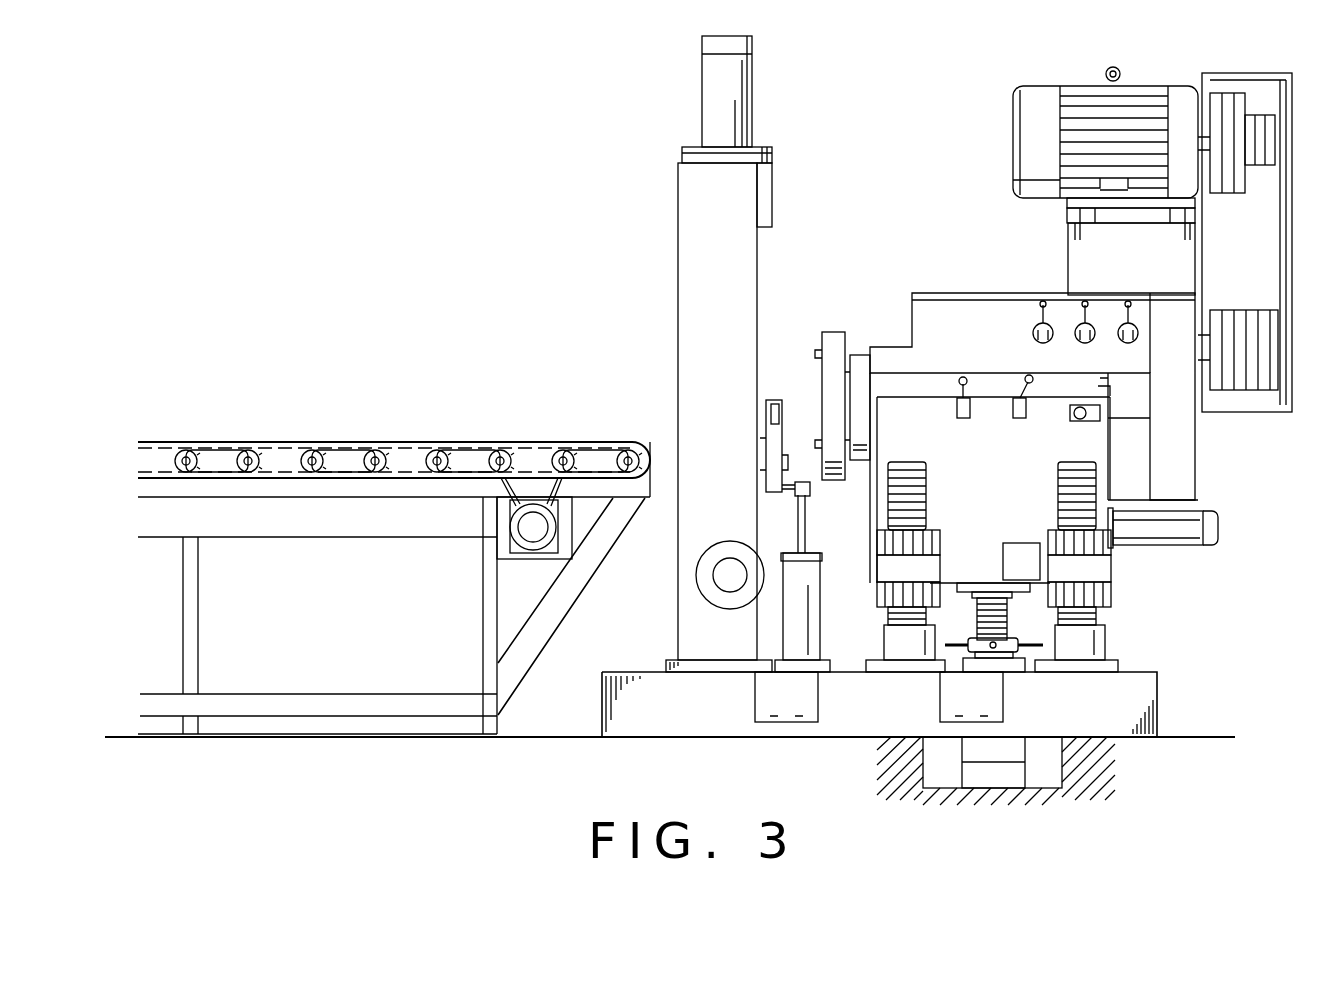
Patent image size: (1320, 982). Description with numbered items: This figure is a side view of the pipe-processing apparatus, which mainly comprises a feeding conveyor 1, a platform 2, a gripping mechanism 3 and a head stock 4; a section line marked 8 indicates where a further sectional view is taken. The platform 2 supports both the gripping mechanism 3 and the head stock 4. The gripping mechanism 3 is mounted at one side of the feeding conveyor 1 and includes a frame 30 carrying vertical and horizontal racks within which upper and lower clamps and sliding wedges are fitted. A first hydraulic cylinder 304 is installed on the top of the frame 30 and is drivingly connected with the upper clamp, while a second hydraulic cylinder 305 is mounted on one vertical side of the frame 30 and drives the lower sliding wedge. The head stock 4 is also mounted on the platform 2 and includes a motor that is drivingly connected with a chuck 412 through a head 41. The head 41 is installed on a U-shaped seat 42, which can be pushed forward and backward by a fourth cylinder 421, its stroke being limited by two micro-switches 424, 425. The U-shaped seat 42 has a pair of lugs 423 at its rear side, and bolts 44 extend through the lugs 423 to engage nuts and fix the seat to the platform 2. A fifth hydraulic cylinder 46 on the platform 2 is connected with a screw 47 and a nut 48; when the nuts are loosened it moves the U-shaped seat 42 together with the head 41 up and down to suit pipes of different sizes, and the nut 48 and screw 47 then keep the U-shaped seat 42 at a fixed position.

The feeding conveyor 1 is at (418, 440).
The platform 2 is at (1145, 693).
The gripping mechanism 3 is at (726, 354).
The frame 30 is at (688, 220).
The first hydraulic cylinder 304 is at (745, 106).
The second hydraulic cylinder 305 is at (723, 598).
The head stock 4 is at (1046, 369).
The head 41 is at (930, 315).
The U-shaped seat 42 is at (913, 412).
The chuck 412 is at (836, 340).
The fourth cylinder 421 is at (1220, 528).
The lugs 423 is at (930, 570).
The micro-switch 424 is at (963, 420).
The micro-switch 425 is at (1020, 420).
The bolts 44 is at (920, 497).
The fifth hydraulic cylinder 46 is at (1018, 760).
The screw 47 is at (1004, 614).
The nut 48 is at (972, 640).
The section line 8- 8 is at (993, 76).